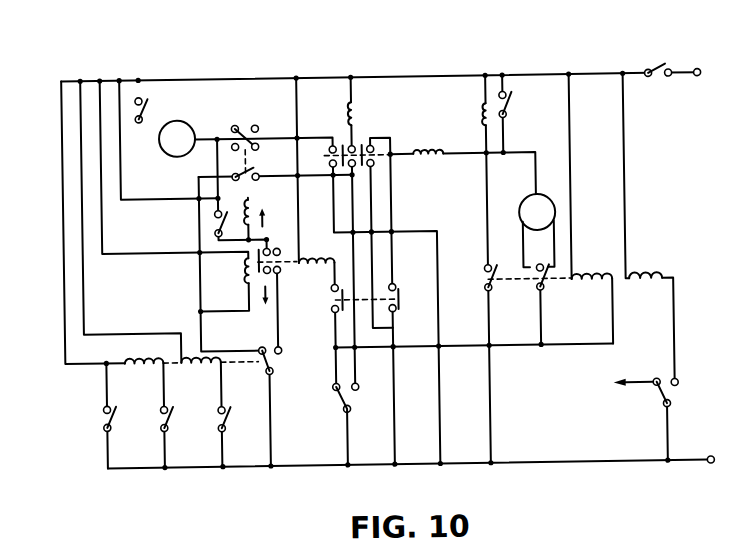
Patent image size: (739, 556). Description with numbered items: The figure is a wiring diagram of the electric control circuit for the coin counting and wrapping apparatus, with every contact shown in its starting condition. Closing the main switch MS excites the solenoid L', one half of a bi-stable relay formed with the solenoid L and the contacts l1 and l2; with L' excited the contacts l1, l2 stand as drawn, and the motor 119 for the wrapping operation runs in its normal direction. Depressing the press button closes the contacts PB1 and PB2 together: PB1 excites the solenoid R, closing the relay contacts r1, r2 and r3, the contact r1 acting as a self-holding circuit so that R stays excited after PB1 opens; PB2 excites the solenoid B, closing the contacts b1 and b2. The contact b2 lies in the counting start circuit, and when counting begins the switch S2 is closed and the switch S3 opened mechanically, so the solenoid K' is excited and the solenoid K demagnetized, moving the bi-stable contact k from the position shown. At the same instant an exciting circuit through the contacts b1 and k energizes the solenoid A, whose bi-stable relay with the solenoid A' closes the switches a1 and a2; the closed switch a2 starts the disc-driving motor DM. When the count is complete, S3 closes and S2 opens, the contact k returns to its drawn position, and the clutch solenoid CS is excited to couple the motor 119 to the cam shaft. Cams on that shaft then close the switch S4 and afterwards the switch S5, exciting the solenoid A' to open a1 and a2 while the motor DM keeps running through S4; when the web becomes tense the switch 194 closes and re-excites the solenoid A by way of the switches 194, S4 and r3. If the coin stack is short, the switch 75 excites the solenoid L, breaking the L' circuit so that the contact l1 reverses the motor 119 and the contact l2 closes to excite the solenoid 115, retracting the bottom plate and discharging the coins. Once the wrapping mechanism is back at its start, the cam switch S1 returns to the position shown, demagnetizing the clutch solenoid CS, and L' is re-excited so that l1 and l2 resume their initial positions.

The switch 194 is at (216, 226).
The solenoid 115 is at (485, 115).
The motor for the wrapping operation 119 is at (520, 203).
The switch 75 is at (668, 393).
The motor for driving the disc DM is at (165, 127).
The main switch MS is at (658, 70).
The clutch solenoid CS is at (352, 108).
The switch S4 is at (234, 124).
The switch a2 is at (259, 129).
The switch a1 is at (258, 172).
The solenoid A is at (261, 203).
The solenoid A' is at (231, 276).
The contact b2 is at (272, 246).
The contact b1 is at (281, 270).
The solenoid B is at (314, 260).
The press button switch contact PB2 is at (328, 298).
The press button switch contact PB1 is at (396, 294).
The relay contact r3 is at (330, 146).
The relay contact r2 is at (355, 147).
The relay contact r1 is at (374, 147).
The solenoid R is at (423, 159).
The contact l2 is at (496, 283).
The contact l1 is at (548, 283).
The solenoid L' is at (591, 259).
The solenoid L is at (646, 257).
The solenoid K is at (144, 375).
The solenoid K' is at (201, 374).
The relay contact k is at (274, 360).
The switch S5 is at (103, 414).
The counting completion switch S3 is at (168, 412).
The switch S2 is at (226, 412).
The cam switch S1 is at (355, 395).